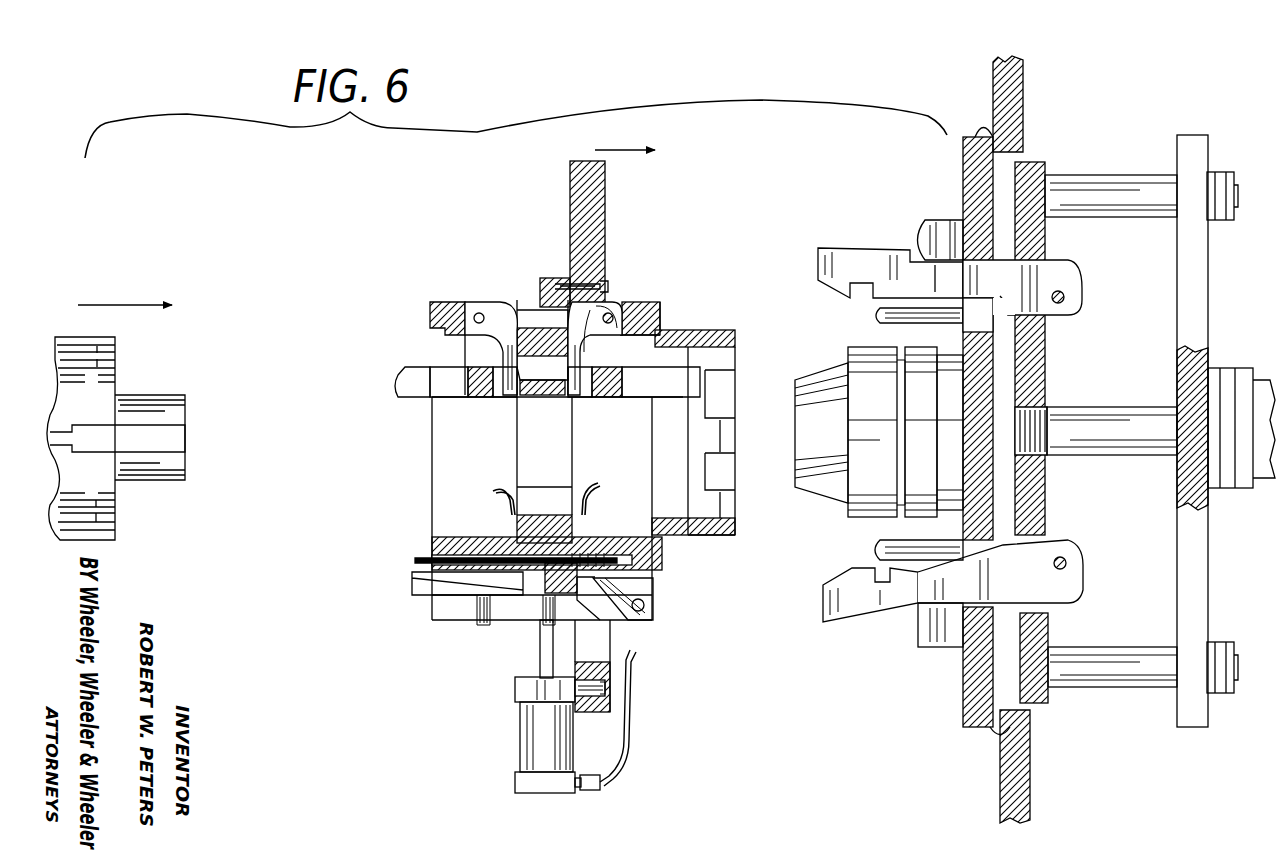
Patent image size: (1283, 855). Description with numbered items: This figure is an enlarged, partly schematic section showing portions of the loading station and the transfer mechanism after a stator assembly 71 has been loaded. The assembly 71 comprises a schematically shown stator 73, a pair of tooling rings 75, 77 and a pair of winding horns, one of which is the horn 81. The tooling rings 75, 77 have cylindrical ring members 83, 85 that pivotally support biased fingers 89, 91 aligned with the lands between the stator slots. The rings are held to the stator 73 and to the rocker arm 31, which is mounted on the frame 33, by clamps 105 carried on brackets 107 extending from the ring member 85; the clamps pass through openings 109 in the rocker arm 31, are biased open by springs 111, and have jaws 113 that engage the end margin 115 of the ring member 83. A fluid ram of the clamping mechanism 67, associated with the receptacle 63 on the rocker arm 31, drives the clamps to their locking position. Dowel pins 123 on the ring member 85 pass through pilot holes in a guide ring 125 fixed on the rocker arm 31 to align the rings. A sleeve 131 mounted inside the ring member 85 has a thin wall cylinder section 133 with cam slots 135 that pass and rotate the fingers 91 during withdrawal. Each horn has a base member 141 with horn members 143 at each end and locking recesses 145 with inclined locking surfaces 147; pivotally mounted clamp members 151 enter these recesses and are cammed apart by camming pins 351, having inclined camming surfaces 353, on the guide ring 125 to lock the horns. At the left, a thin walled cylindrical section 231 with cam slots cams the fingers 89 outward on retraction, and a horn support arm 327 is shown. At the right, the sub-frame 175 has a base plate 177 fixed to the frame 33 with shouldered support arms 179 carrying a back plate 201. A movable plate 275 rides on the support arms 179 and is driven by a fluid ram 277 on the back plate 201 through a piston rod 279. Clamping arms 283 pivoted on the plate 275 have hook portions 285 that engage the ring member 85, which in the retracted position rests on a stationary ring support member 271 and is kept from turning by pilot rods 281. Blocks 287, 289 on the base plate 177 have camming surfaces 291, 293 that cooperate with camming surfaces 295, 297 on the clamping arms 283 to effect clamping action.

The rocker arm 31 is at (580, 185).
The frame 33 is at (1018, 80).
The receptacle 63 is at (435, 655).
The clamping mechanism 67 is at (500, 745).
The stator assembly 71 is at (450, 238).
The stator 73 is at (550, 477).
The tooling ring 75 is at (408, 318).
The tooling ring 77 is at (680, 312).
The winding horn 81 is at (430, 372).
The ring member 83 is at (436, 306).
The ring member 85 is at (650, 302).
The fingers 89 is at (500, 490).
The fingers 91 is at (625, 480).
The clamp 105 is at (540, 656).
The bracket 107 is at (652, 582).
The opening 109 is at (628, 655).
The spring 111 is at (625, 612).
The jaw 113 is at (420, 578).
The end margin 115 is at (432, 483).
The dowel pin 123 is at (430, 562).
The guide ring 125 is at (545, 612).
The sleeve 131 is at (712, 332).
The thin wall cylinder section 133 is at (655, 528).
The cam slot 135 is at (598, 528).
The base member 141 is at (528, 388).
The horn member 143 is at (415, 392).
The locking recess 145 is at (540, 397).
The inclined locking surface 147 is at (478, 392).
The clamp member 151 is at (500, 352).
The sub-frame 175 is at (970, 735).
The base plate 177 is at (975, 694).
The support arm 179 is at (1130, 190).
The back plate 201 is at (1200, 572).
The thin walled cylindrical section 231 is at (100, 485).
The ring support member 271 is at (870, 483).
The movable plate 275 is at (1035, 378).
The fluid ram 277 is at (1245, 490).
The piston rod 279 is at (1155, 438).
The pilot rod 281 is at (880, 318).
The clamping arm 283 is at (1072, 280).
The hook portion 285 is at (855, 275).
The block 287 is at (942, 225).
The block 289 is at (1047, 348).
The camming surface 291 is at (915, 225).
The camming surface 293 is at (985, 320).
The camming surface 295 is at (932, 278).
The camming surface 297 is at (1022, 300).
The horn support arm 327 is at (175, 468).
The camming pin 351 is at (547, 296).
The inclined camming surface 353 is at (522, 300).